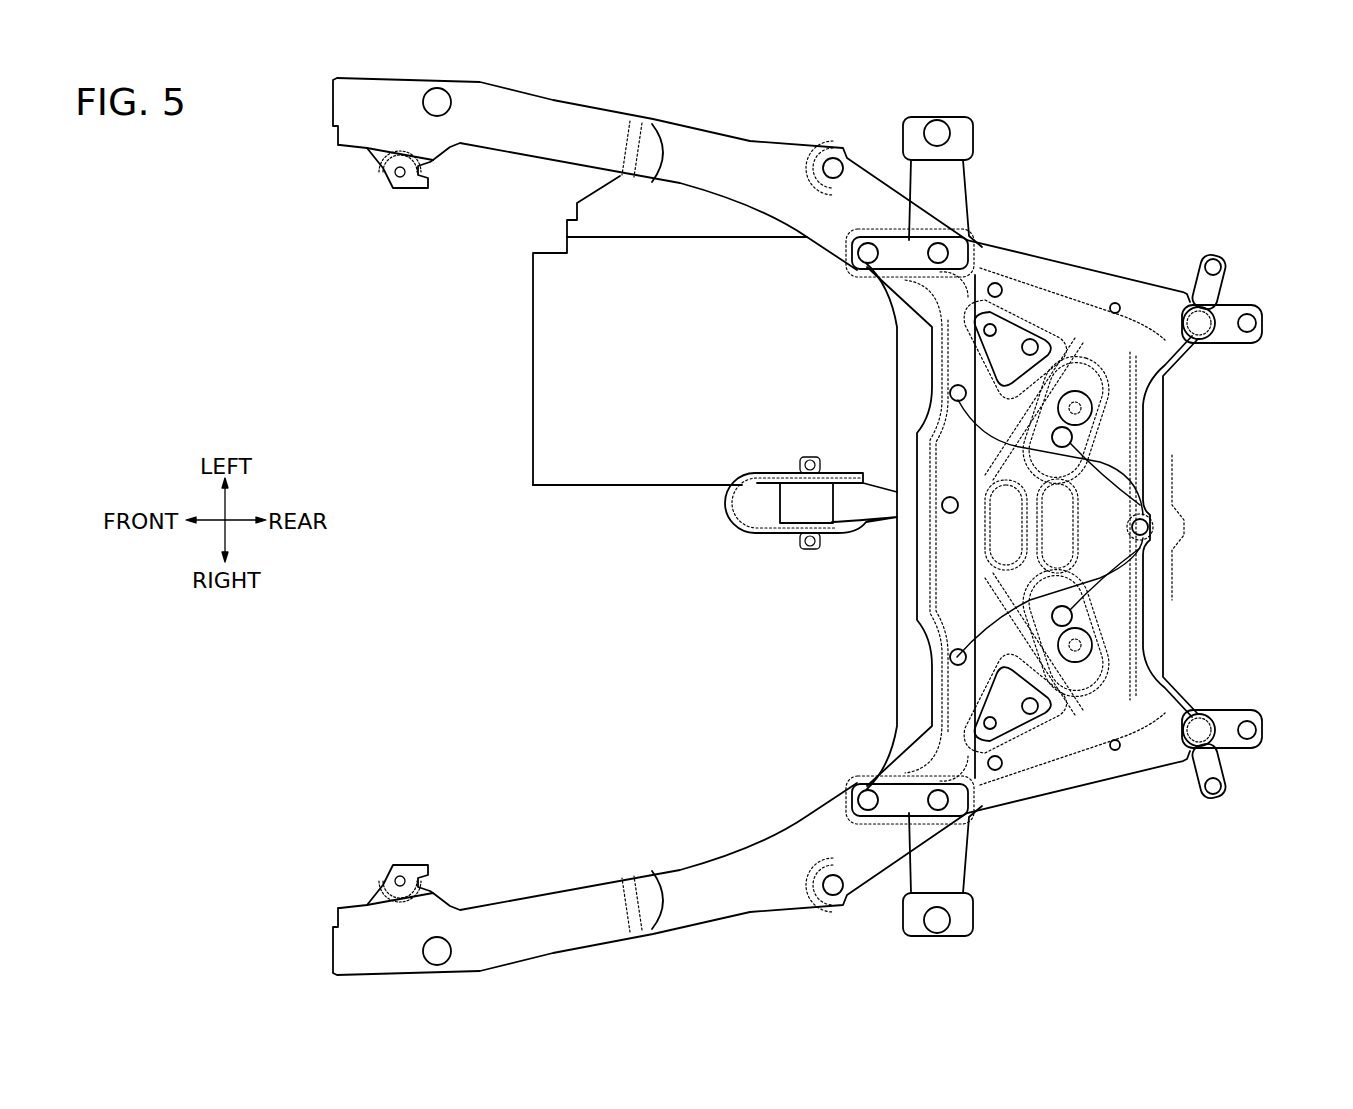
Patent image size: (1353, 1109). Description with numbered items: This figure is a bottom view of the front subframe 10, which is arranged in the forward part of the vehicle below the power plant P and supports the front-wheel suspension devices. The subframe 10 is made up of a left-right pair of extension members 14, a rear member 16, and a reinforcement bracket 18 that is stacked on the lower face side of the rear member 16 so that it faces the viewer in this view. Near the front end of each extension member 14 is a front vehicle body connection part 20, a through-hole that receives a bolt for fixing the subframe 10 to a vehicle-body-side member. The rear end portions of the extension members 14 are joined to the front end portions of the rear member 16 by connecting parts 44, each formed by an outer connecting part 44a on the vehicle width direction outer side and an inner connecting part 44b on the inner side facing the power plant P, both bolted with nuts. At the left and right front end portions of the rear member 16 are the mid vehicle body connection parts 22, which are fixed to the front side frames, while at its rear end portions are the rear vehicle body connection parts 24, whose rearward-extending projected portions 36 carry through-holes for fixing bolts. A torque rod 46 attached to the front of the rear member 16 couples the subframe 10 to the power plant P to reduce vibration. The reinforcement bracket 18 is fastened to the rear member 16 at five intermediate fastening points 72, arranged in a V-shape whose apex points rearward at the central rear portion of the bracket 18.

The front subframe 10 is at (1127, 212).
The extension member 14 is at (542, 166).
The rear member 16 is at (888, 665).
The reinforcement bracket 18 is at (1150, 447).
The front vehicle body connection part 20 is at (438, 116).
The mid vehicle body connection part 22 is at (938, 126).
The rear vehicle body connection part 24 is at (1198, 340).
The projected portion 36 is at (1263, 325).
The connecting part 44 is at (838, 218).
The outer connecting part 44a is at (833, 158).
The inner connecting part 44b is at (868, 264).
The torque rod 46 is at (870, 542).
The intermediate fastening point 72 is at (1150, 527).
The power plant P is at (505, 364).